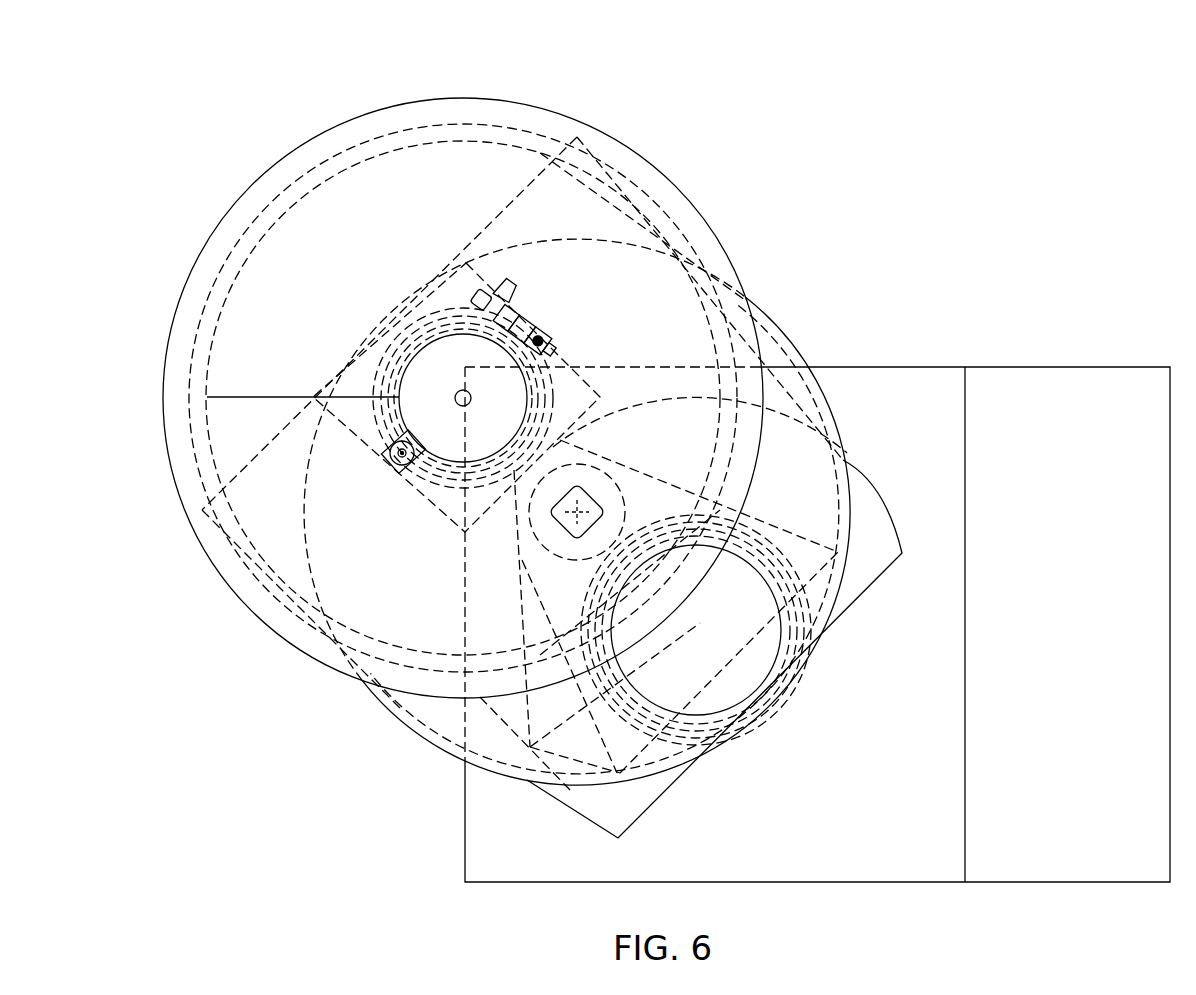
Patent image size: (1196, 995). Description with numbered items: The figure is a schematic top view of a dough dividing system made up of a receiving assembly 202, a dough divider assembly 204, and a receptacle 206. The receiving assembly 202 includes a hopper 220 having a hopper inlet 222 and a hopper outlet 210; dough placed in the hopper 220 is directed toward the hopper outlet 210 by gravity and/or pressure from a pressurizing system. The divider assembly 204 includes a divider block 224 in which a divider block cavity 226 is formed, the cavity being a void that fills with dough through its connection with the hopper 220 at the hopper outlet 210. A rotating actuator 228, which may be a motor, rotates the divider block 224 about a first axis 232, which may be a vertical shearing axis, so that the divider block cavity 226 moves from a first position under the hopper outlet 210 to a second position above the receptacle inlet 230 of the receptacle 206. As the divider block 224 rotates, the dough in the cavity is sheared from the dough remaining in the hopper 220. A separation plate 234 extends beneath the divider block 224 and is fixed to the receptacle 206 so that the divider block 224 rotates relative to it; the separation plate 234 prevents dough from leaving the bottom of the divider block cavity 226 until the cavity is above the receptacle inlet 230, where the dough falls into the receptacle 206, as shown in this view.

The receiving assembly 202 is at (503, 375).
The dough divider assembly 204 is at (603, 539).
The receptacle 206 is at (1080, 352).
The hopper outlet 210 is at (451, 358).
The hopper 220 is at (458, 88).
The hopper inlet 222 is at (344, 183).
The divider block 224 is at (795, 345).
The divider block cavity 226 is at (703, 580).
The rotating actuator 228 is at (604, 511).
The receptacle inlet 230 is at (740, 712).
The first axis 232 is at (562, 542).
The separation plate 234 is at (824, 405).